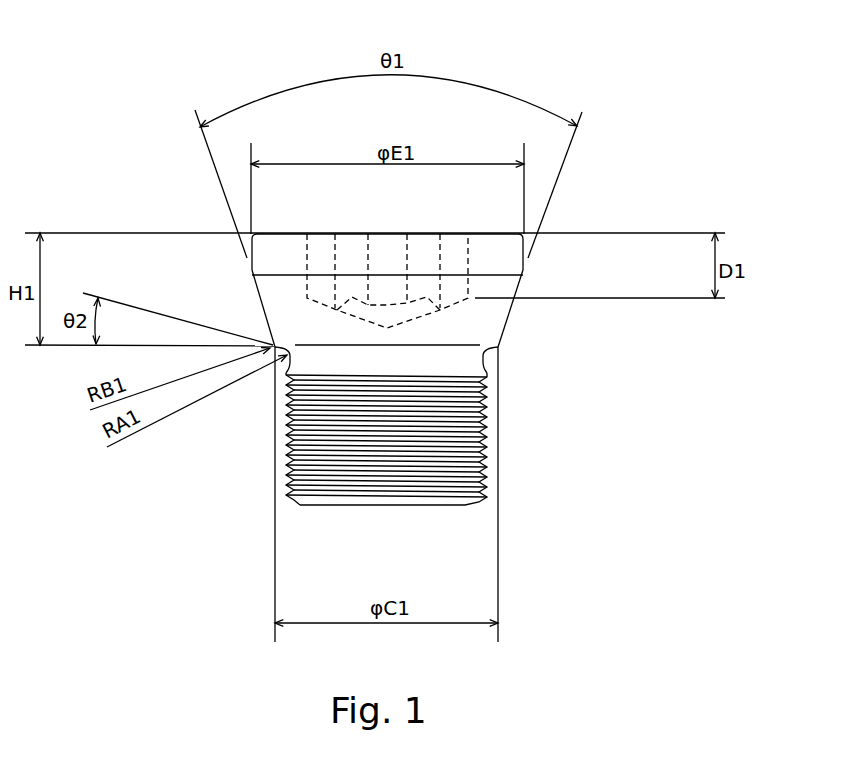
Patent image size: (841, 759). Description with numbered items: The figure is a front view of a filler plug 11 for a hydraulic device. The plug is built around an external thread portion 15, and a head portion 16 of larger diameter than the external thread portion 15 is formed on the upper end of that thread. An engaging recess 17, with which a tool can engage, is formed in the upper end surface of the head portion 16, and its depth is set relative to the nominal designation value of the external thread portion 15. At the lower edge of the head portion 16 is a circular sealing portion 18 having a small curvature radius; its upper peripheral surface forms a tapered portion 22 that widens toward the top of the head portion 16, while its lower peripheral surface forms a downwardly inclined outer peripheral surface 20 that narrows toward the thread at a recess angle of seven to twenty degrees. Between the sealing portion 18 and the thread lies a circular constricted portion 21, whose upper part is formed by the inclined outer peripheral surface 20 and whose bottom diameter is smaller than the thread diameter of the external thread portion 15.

The filler plug 11 is at (118, 36).
The external thread portion 15 is at (483, 450).
The head portion 16 is at (492, 247).
The engaging recess 17 is at (337, 250).
The sealing portion 18 is at (502, 345).
The inclined outer peripheral surface 20 is at (490, 352).
The circular constricted portion 21 is at (493, 363).
The tapered portion 22 is at (513, 317).